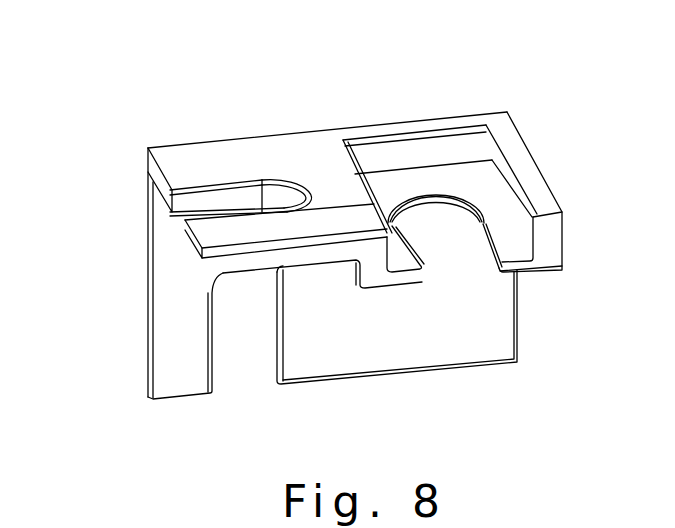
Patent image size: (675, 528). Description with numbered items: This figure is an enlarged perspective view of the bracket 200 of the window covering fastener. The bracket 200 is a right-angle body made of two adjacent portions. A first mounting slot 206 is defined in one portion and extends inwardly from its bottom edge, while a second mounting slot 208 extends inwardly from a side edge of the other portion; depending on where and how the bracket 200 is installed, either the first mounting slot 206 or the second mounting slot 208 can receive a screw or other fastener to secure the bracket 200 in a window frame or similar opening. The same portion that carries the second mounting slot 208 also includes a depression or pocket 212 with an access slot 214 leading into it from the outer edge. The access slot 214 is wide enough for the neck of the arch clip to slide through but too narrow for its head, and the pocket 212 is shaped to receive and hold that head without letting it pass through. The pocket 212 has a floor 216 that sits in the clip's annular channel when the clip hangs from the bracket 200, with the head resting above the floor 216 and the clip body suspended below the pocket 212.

The bracket 200 is at (157, 97).
The first mounting slot 206 is at (247, 347).
The second mounting slot 208 is at (187, 200).
The depression or pocket 212 is at (480, 186).
The access slot 214 is at (462, 245).
The floor 216 is at (403, 258).